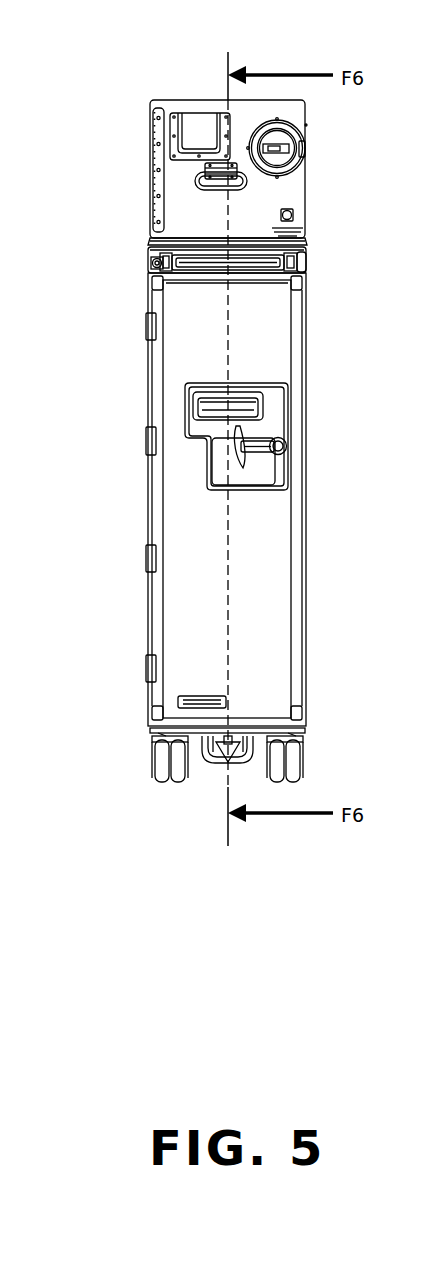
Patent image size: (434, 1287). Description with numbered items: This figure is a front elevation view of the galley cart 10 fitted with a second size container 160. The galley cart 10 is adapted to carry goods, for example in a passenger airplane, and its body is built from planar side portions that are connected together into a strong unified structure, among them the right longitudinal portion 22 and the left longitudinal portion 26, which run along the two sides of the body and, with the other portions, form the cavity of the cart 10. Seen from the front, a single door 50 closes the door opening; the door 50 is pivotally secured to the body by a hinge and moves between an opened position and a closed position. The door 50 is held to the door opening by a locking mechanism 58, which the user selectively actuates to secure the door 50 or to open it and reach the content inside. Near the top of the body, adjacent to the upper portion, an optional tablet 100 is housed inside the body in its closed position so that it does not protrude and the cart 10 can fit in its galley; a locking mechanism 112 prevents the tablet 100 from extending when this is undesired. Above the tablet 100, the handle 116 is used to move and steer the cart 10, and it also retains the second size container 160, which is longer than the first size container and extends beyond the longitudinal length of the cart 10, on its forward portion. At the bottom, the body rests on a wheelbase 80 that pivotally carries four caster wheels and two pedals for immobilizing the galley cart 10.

The galley cart 10 is at (122, 326).
The right longitudinal portion 22 is at (323, 386).
The left longitudinal portion 26 is at (122, 434).
The door 50 is at (227, 502).
The locking mechanism 58 is at (263, 456).
The wheelbase 80 is at (160, 801).
The tablet 100 is at (272, 265).
The locking mechanism 112 is at (153, 259).
The handle 116 is at (270, 248).
The second size container 160 is at (184, 98).